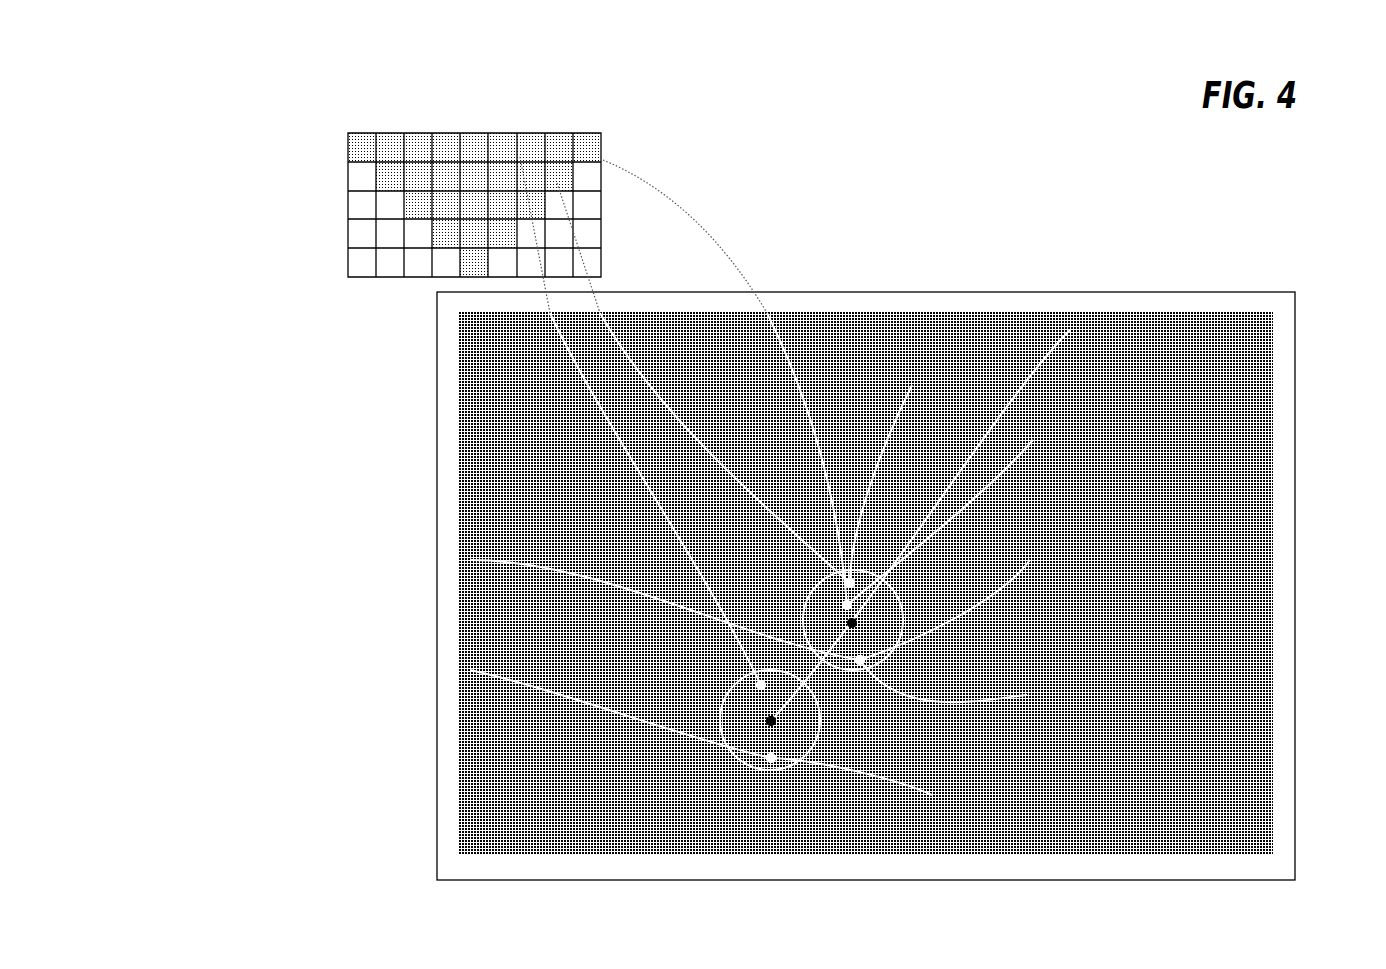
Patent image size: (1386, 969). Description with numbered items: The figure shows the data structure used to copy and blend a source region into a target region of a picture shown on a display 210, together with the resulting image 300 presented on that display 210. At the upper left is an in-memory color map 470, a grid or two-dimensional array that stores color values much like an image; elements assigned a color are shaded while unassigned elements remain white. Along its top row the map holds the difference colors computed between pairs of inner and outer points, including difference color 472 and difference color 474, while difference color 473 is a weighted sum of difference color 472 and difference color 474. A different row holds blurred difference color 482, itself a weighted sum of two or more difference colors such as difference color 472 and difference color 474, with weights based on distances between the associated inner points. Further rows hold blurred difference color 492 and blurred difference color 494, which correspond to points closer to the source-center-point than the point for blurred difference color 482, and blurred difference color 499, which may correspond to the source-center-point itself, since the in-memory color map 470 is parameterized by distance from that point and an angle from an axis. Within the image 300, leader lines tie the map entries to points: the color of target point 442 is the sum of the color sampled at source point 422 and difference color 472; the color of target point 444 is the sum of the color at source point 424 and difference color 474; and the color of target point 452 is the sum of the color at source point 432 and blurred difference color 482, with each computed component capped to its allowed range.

The display 210 is at (425, 592).
The image 300 is at (868, 298).
The in-memory color map 470 is at (474, 118).
The difference color 472 is at (593, 150).
The difference color 473 is at (567, 140).
The difference color 474 is at (534, 142).
The blurred difference color 482 is at (558, 170).
The blurred difference color 492 is at (407, 210).
The blurred difference color 494 is at (358, 203).
The blurred difference color 499 is at (462, 265).
The source point 422 is at (614, 621).
The source point 424 is at (934, 780).
The source point 432 is at (617, 688).
The target point 442 is at (962, 474).
The target point 444 is at (1026, 681).
The target point 452 is at (1021, 517).